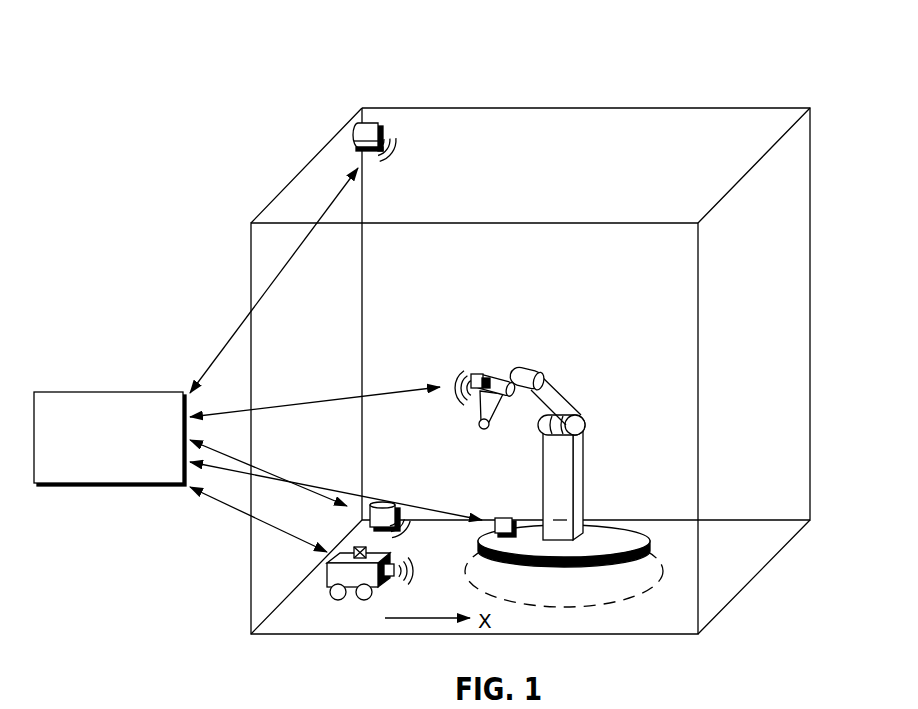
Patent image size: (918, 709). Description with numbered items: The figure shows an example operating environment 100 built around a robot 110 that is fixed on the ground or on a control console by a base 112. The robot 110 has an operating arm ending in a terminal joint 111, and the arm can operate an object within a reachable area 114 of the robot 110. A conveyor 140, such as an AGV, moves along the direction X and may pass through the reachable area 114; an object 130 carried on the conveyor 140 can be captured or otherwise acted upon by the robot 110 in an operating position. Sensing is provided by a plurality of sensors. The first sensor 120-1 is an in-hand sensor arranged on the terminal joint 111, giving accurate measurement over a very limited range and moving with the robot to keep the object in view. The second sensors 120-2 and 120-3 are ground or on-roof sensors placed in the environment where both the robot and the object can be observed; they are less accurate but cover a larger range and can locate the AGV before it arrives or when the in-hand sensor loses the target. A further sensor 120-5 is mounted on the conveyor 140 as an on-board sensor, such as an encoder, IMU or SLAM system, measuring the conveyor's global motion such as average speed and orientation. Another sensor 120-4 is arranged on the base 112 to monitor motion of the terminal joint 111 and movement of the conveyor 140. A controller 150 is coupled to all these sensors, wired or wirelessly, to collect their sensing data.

The operating environment 100 is at (598, 76).
The robot 110 is at (531, 446).
The terminal joint 111 is at (511, 396).
The base 112 is at (630, 532).
The reachable area 114 is at (582, 606).
The first sensor 120-1 is at (475, 375).
The second sensor 120-2 is at (378, 125).
The second sensor 120-3 is at (400, 516).
The sensor 120-4 is at (500, 517).
The third sensor 120-5 is at (400, 584).
The object 130 is at (357, 548).
The conveyor 140 is at (370, 562).
The controller 150 is at (65, 392).